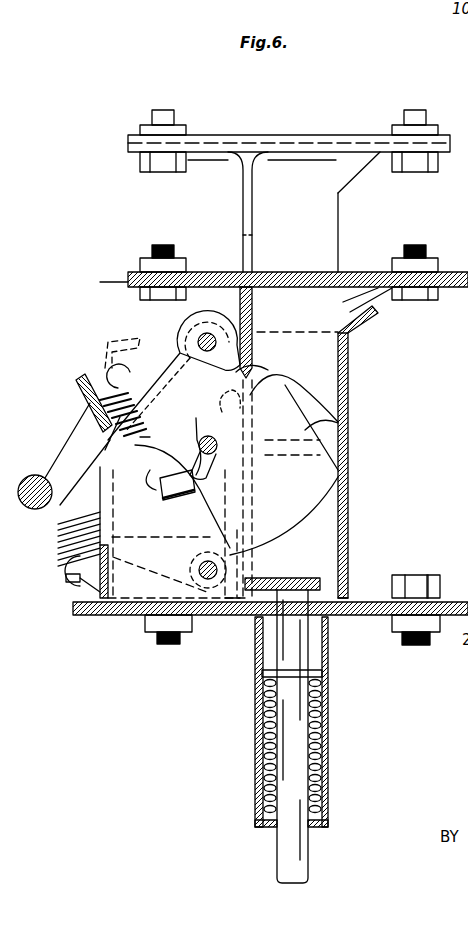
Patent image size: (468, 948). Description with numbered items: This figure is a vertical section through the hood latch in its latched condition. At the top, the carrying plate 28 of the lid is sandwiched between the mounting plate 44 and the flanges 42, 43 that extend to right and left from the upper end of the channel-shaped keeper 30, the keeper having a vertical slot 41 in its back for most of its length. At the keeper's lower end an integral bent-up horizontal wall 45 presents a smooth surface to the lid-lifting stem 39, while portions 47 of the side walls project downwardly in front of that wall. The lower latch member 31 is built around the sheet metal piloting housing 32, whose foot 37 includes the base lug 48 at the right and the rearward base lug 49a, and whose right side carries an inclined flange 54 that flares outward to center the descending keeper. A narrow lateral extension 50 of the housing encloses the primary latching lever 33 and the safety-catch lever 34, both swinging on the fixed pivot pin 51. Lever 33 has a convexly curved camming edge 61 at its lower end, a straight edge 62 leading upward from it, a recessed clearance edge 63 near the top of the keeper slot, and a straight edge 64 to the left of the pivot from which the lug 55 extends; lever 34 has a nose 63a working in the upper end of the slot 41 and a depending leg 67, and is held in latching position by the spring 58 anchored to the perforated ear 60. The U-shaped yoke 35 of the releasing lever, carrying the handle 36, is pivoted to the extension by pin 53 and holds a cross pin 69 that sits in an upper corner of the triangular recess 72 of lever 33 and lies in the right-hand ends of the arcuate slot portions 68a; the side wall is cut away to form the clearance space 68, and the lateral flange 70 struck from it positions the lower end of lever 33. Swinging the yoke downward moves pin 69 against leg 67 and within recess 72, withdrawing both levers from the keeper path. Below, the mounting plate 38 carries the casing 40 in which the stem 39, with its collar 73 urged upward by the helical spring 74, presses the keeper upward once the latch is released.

The carrying plate 28 is at (118, 282).
The keeper 30 is at (350, 289).
The lower latch member 31 is at (110, 608).
The piloting member or housing 32 is at (359, 401).
The primary latching lever 33 is at (294, 500).
The safety-catch lever 34 is at (258, 373).
The pivoted yoke portion of the releasing lever 35 is at (58, 517).
The manipulating rod or handle portion of the releasing lever 36 is at (64, 449).
The foot portion of the piloting housing 37 is at (389, 589).
The mounting plate 38 is at (232, 617).
The lid-lifting stem 39 is at (300, 633).
The casing 40 is at (328, 704).
The vertical slot 41 is at (294, 398).
The integral portion 42 is at (420, 300).
The integral portion 43 is at (138, 295).
The mounting plate 44 is at (304, 286).
The bent-up horizontal wall 45 is at (300, 578).
The portions of the side walls 47 is at (340, 586).
The base lug 48 is at (435, 592).
The rearward base lug 49a is at (160, 574).
The lateral extension 50 is at (192, 563).
The pivoting pin 51 is at (216, 339).
The pin 53 is at (232, 572).
The inclined flange 54 is at (362, 322).
The lug 55 is at (162, 376).
The spring 58 is at (140, 410).
The perforated ear 60 is at (64, 588).
The convexly curved edge 61 is at (284, 516).
The straight edge portion 62 is at (348, 423).
The recessed edge portion 63 is at (296, 380).
The nose portion 63a is at (226, 401).
The straight edge portion 64 is at (120, 343).
The depending leg 67 is at (196, 420).
The clearance space 68 is at (160, 496).
The arcuate slot portion 68a is at (150, 478).
The cross pin 69 is at (218, 452).
The lateral flange 70 is at (172, 500).
The triangular recess 72 is at (292, 452).
The collar 73 is at (262, 674).
The helical spring 74 is at (263, 740).